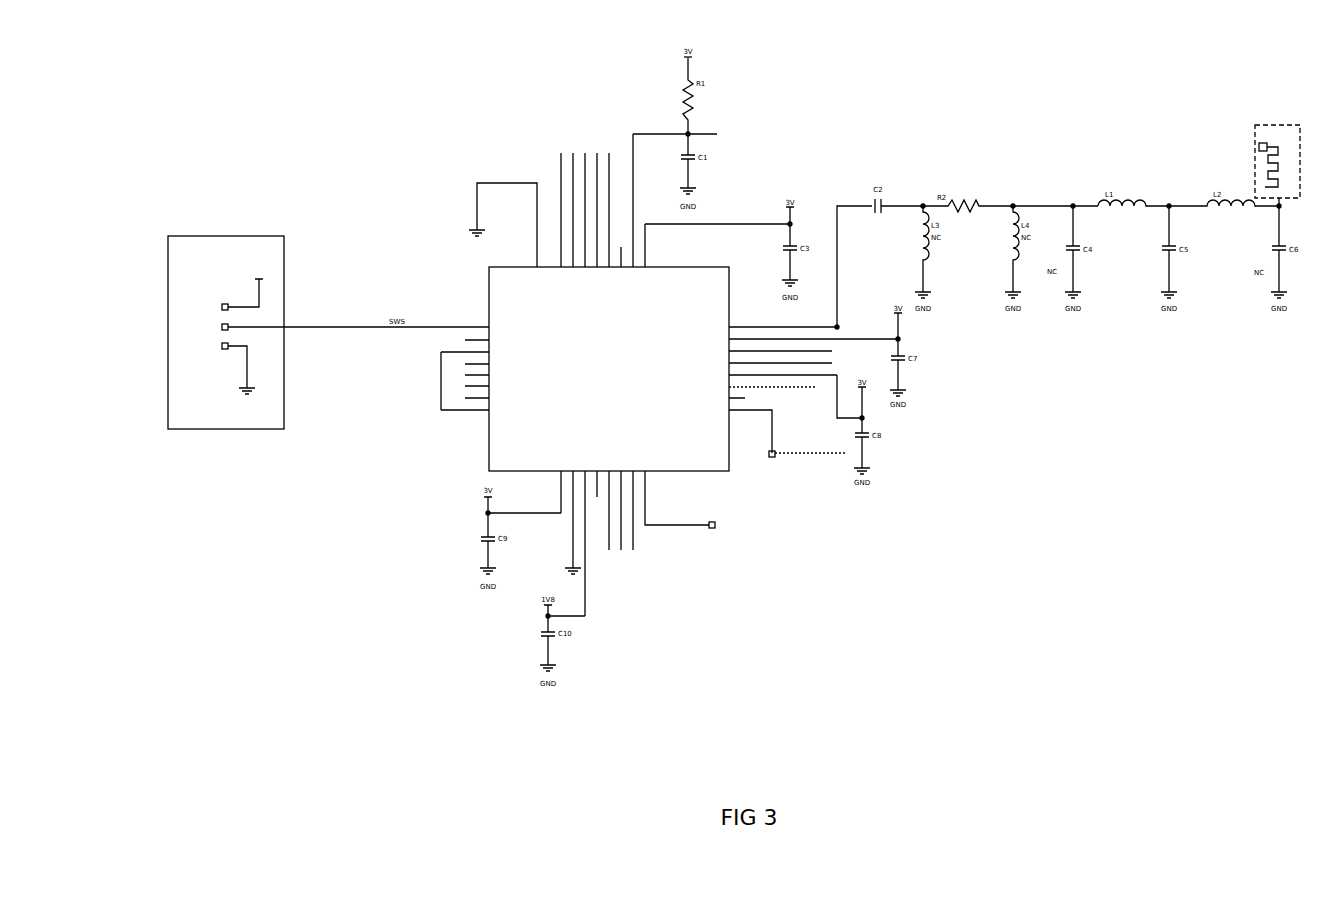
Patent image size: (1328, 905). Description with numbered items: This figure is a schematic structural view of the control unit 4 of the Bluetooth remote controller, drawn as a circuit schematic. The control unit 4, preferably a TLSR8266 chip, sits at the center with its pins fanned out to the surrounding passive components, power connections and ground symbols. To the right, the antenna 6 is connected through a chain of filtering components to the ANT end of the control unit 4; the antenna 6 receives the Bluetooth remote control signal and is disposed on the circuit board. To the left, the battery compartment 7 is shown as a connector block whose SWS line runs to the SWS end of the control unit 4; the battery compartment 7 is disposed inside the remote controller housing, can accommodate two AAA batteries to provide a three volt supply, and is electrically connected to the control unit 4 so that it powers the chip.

The control unit 4 is at (490, 300).
The antenna 6 is at (1280, 125).
The battery compartment 7 is at (272, 236).